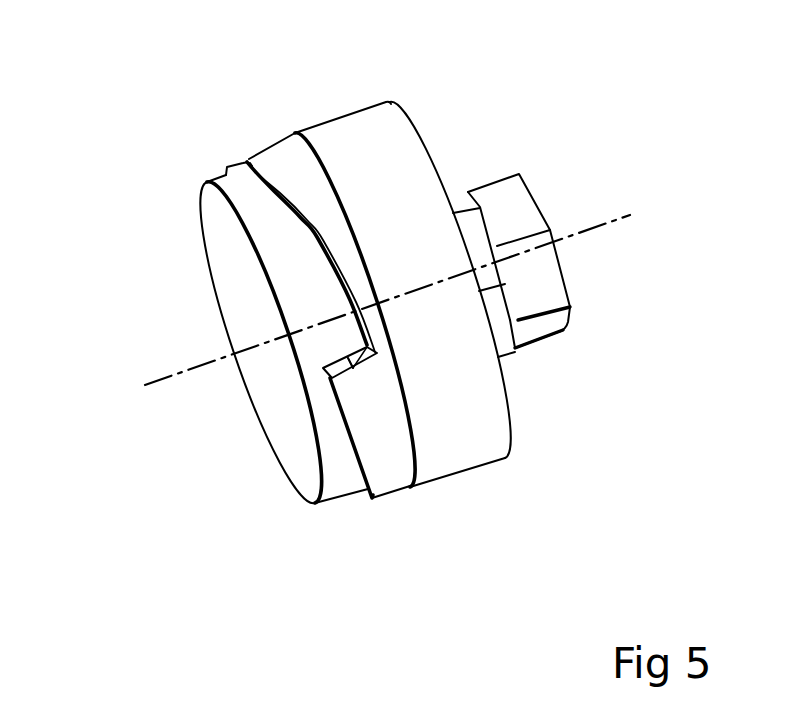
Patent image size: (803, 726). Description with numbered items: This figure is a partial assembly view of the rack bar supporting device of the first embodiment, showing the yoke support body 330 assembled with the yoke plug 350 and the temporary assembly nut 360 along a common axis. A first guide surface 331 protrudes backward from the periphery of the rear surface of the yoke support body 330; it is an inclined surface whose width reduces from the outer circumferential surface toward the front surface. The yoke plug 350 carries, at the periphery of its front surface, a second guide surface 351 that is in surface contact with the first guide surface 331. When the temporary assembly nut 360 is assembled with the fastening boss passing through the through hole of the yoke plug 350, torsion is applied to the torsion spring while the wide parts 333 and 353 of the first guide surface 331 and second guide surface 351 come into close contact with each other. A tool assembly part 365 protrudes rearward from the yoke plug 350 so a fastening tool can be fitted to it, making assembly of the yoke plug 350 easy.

The yoke support body 330 is at (215, 220).
The first guide surface 331 is at (279, 203).
The wide part of the first guide surface 333 is at (345, 363).
The yoke plug 350 is at (362, 122).
The second guide surface 351 is at (247, 157).
The wide part of the second guide surface 353 is at (350, 357).
The temporary assembly nut 360 is at (523, 203).
The tool assembly part 365 is at (460, 193).